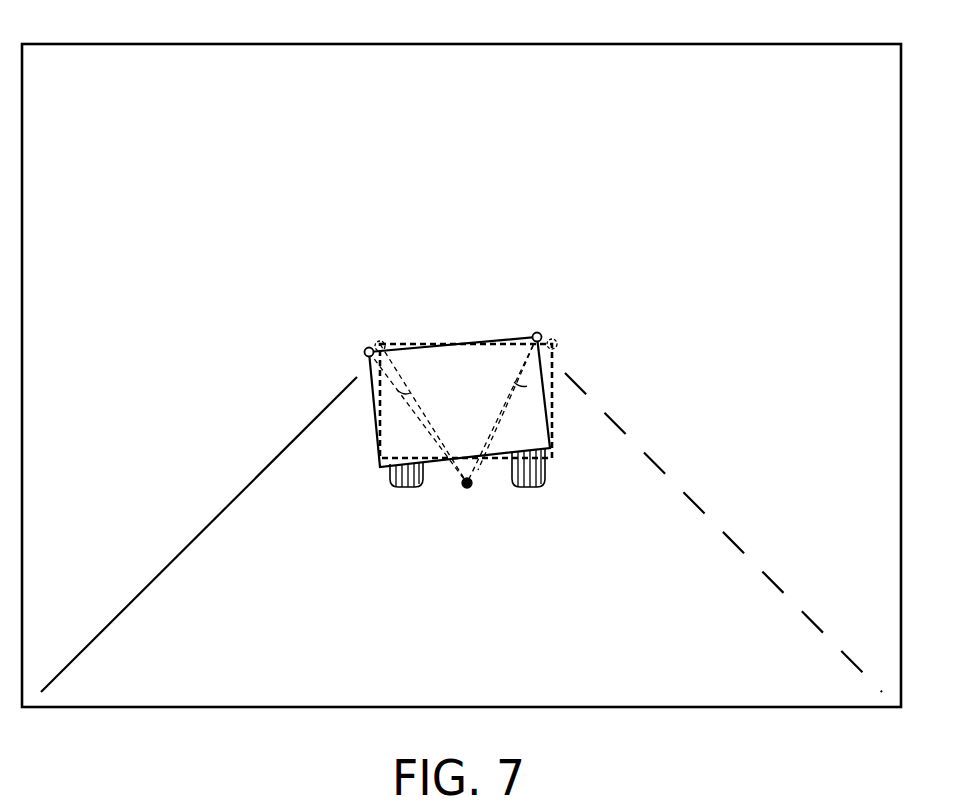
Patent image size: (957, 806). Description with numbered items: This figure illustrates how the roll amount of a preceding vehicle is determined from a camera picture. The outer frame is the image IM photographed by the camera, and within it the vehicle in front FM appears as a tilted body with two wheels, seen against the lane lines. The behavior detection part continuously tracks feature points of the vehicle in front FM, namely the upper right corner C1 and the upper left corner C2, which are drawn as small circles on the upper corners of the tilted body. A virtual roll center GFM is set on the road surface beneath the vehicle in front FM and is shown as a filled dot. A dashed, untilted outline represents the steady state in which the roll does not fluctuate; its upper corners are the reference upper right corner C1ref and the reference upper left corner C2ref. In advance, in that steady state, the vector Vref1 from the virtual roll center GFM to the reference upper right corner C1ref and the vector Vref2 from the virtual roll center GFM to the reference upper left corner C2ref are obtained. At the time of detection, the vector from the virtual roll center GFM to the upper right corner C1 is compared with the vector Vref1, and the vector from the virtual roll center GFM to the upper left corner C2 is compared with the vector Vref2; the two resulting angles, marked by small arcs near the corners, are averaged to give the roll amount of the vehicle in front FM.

The image IM is at (461, 44).
The vehicle in front FM is at (377, 440).
The virtual roll center GFM is at (466, 490).
The upper right corner C1 is at (537, 332).
The upper left corner C2 is at (364, 353).
The reference upper right corner C1ref is at (542, 338).
The reference upper left corner C2ref is at (383, 341).
The vector Vref1 is at (503, 425).
The vector Vref2 is at (388, 366).